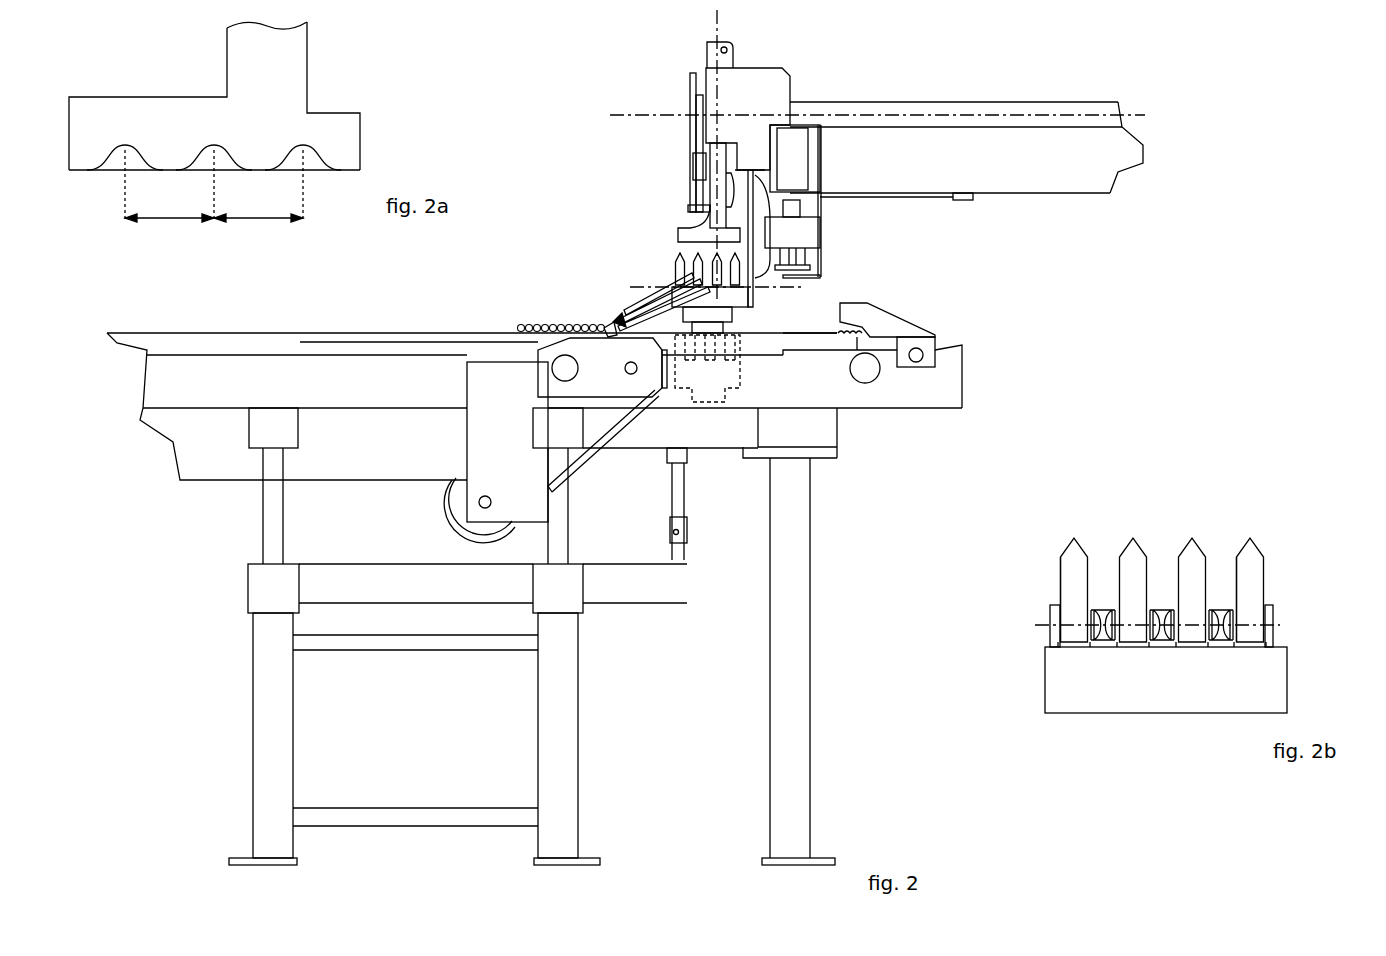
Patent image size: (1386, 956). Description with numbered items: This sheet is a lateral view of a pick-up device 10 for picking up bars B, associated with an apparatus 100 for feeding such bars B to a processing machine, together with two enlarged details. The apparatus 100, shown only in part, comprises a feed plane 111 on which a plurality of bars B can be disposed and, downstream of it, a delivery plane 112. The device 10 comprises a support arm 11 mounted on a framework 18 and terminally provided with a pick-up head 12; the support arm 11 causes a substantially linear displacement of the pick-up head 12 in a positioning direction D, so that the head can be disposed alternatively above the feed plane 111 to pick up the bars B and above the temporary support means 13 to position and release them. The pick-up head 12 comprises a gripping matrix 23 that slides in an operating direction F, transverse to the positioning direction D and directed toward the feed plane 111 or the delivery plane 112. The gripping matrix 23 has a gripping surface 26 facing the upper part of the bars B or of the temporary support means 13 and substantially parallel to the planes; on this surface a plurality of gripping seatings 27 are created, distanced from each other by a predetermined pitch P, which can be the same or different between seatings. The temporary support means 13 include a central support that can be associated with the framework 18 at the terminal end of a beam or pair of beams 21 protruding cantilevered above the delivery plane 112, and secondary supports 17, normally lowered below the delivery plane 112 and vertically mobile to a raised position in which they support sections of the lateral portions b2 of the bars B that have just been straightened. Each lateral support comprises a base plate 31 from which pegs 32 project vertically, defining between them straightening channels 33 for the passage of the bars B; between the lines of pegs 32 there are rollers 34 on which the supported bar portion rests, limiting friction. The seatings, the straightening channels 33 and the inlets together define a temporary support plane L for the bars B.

In FIG. 2, the pick-up device 10 is at (966, 70).
In FIG. 2, the support arm 11 is at (1006, 100).
In FIG. 2, the pick-up head 12 is at (686, 146).
In FIG. 2, the temporary support means 13 is at (668, 258).
In FIG. 2, the secondary supports 17 is at (735, 404).
In FIG. 2, the framework 18 is at (1088, 201).
In FIG. 2, the beams 21 is at (904, 184).
In FIG. 2, the gripping matrix 23 is at (687, 214).
In FIG. 2A, the gripping matrix 23 is at (157, 94).
In FIG. 2, the gripping surface 26 is at (682, 243).
In FIG. 2A, the gripping surface 26 is at (72, 174).
In FIG. 2A, the gripping seatings 27 is at (336, 165).
In FIG. 2B, the base plate 31 is at (1053, 693).
In FIG. 2B, the pegs 32 is at (1245, 568).
In FIG. 2B, the straightening channels 33 is at (1230, 580).
In FIG. 2B, the rollers 34 is at (1221, 643).
In FIG. 2, the apparatus 100 is at (542, 127).
In FIG. 2, the feed plane 111 is at (118, 322).
In FIG. 2, the delivery plane 112 is at (802, 337).
In FIG. 2, the lateral portion b2 is at (668, 300).
In FIG. 2, the bars B is at (575, 310).
In FIG. 2, the positioning direction D is at (632, 115).
In FIG. 2, the operating direction F is at (716, 26).
In FIG. 2, the temporary support plane L is at (785, 285).
In FIG. 2A, the pitch P is at (214, 186).